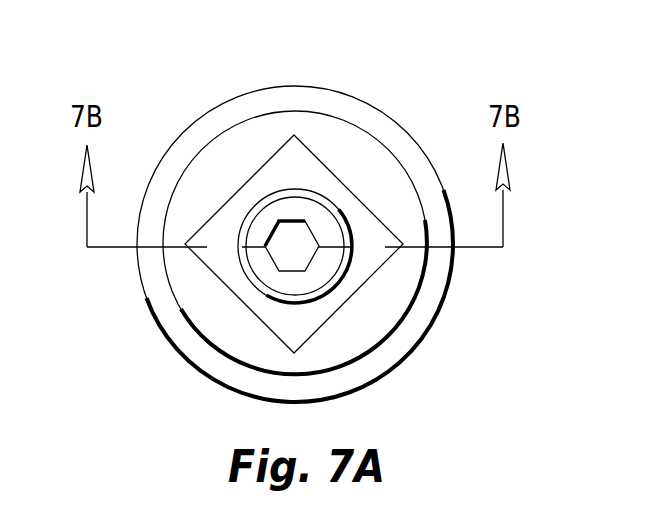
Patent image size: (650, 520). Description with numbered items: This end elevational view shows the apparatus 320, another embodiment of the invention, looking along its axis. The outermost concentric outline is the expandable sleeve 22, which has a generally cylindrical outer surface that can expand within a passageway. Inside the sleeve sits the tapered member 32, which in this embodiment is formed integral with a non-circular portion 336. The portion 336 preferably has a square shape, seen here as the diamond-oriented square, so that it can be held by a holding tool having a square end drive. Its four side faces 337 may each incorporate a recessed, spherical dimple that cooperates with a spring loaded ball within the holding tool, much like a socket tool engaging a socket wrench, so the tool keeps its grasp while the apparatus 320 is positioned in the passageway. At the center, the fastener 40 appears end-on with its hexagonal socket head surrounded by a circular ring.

The apparatus 320 is at (403, 90).
The tapered member 32 is at (365, 327).
The expandable sleeve 22 is at (422, 312).
The side faces 337 is at (218, 213).
The non-circular portion 336 is at (232, 267).
The fastener 40 is at (276, 213).